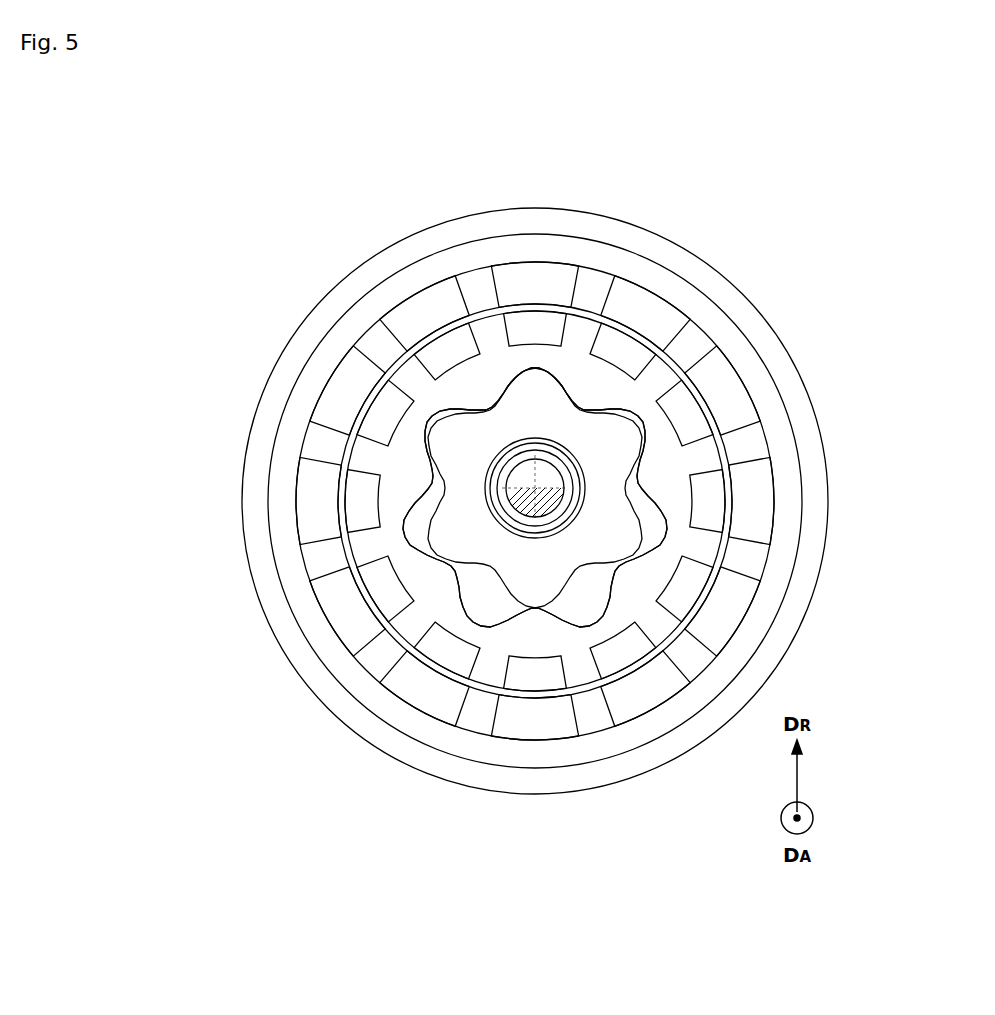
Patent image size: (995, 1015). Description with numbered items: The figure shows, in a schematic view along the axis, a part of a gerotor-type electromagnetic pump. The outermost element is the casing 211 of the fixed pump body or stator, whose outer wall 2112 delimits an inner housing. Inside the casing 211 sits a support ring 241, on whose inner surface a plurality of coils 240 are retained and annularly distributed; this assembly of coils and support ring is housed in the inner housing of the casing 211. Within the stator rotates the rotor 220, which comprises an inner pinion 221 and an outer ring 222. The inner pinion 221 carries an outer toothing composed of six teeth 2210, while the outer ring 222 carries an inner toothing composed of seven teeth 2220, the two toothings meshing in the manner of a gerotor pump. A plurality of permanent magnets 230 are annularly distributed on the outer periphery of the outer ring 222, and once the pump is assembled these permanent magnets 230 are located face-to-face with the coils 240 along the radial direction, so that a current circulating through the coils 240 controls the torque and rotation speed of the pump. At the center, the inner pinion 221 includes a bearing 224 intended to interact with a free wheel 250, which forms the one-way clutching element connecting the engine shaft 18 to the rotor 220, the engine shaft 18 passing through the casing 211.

The casing 211 is at (633, 210).
The outer wall 2112 is at (729, 283).
The support ring 241 is at (546, 248).
The coils 240 is at (340, 390).
The permanent magnets 230 is at (393, 403).
The rotor 220 is at (737, 450).
The teeth of inner toothing 2220 is at (632, 565).
The outer ring 222 is at (430, 605).
The teeth of outer toothing 2210 is at (443, 543).
The inner pinion 221 is at (528, 557).
The bearing 224 is at (538, 440).
The free wheel 250 is at (572, 505).
The engine shaft 18 is at (560, 478).